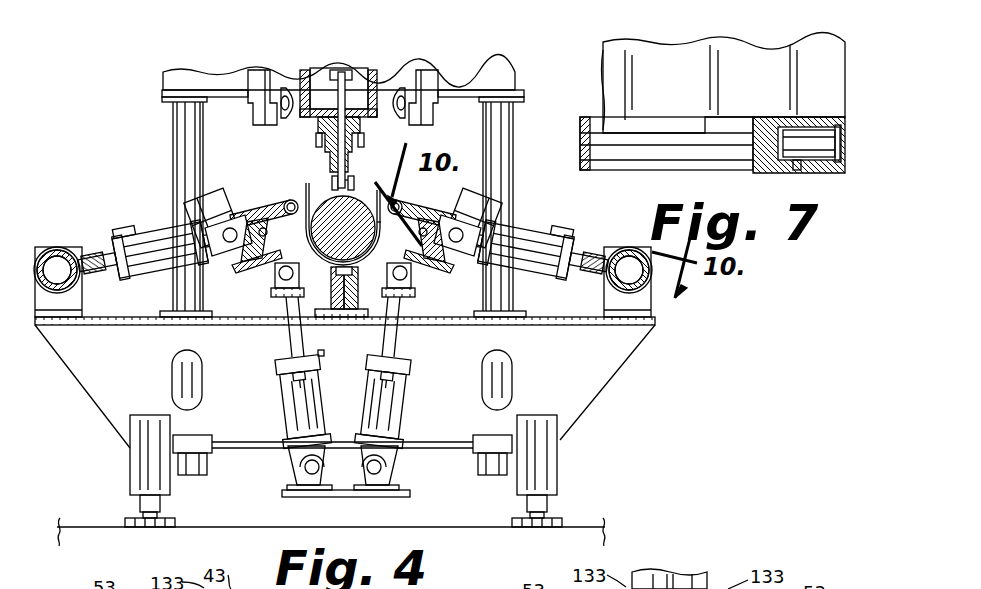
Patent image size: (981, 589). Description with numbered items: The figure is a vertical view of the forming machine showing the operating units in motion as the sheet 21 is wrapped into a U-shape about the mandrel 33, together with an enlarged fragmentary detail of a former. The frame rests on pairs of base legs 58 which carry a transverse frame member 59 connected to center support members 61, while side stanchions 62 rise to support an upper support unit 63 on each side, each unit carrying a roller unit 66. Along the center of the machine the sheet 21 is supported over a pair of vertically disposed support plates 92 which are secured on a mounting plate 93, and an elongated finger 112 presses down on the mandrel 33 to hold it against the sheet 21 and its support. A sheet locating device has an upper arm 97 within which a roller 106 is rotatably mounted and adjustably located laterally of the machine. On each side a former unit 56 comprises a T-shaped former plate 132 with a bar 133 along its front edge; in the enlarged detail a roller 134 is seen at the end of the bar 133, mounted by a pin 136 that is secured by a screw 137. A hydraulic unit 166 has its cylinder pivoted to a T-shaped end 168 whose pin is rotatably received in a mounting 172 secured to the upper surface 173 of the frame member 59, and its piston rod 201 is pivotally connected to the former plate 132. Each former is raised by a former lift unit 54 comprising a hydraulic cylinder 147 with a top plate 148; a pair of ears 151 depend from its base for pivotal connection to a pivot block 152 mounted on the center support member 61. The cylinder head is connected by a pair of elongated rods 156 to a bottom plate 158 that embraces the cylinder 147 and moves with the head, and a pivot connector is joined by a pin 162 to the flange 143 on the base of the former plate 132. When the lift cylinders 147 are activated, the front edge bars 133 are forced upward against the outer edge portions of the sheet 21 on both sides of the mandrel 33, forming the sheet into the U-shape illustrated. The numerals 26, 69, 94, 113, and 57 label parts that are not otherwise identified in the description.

In FIG. 4, the floor 26 is at (76, 527).
In FIG. 4, the upper surface 173 is at (50, 352).
In FIG. 4, the transverse frame member 59 is at (116, 406).
In FIG. 4, the base leg 58 is at (145, 475).
In FIG. 4, the former lift unit 54 is at (278, 455).
In FIG. 4, the center support member 61 is at (290, 496).
In FIG. 4, the hydraulic cylinder 147 is at (292, 411).
In FIG. 4, the top plate 148 is at (286, 366).
In FIG. 4, the bottom plate 158 is at (288, 375).
In FIG. 4, the elongated rods 156 is at (282, 320).
In FIG. 4, the ears 151 is at (298, 463).
In FIG. 4, the pivot block 152 is at (306, 484).
In FIG. 4, the pedestal base 94 is at (328, 317).
In FIG. 4, the support plates 92 is at (332, 302).
In FIG. 4, the mounting plate 93 is at (322, 354).
In FIG. 4, the mandrel 33 is at (354, 200).
In FIG. 4, the sheet 21 is at (300, 184).
In FIG. 4, the cup arm 69 is at (374, 240).
In FIG. 4, the stem 113 is at (334, 188).
In FIG. 4, the upper support unit 63 is at (178, 80).
In FIG. 4, the side stanchion 62 is at (185, 130).
In FIG. 4, the roller unit 66 is at (286, 98).
In FIG. 4, the finger 112 is at (337, 96).
In FIG. 4, the clamp 57 is at (315, 140).
In FIG. 4, the former unit 56 is at (169, 234).
In FIG. 4, the mounting 172 is at (82, 293).
In FIG. 4, the T-shaped end 168 is at (55, 247).
In FIG. 4, the hydraulic unit 166 is at (151, 248).
In FIG. 4, the upper arm 97 is at (212, 196).
In FIG. 4, the roller 106 is at (240, 190).
In FIG. 4, the flange 143 is at (262, 270).
In FIG. 4, the pin 162 is at (290, 278).
In FIG. 4, the piston rod 201 is at (480, 220).
In FIG. 7, the former plate 132 is at (822, 54).
In FIG. 7, the bar 133 is at (685, 162).
In FIG. 7, the rollers 134 is at (843, 170).
In FIG. 7, the pin 136 is at (820, 143).
In FIG. 7, the screw 137 is at (797, 170).